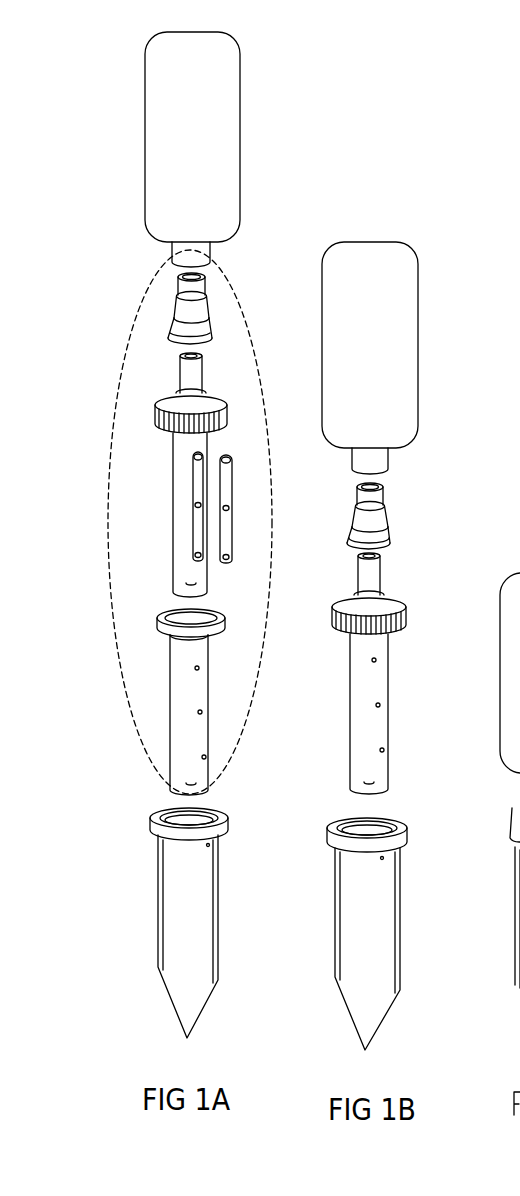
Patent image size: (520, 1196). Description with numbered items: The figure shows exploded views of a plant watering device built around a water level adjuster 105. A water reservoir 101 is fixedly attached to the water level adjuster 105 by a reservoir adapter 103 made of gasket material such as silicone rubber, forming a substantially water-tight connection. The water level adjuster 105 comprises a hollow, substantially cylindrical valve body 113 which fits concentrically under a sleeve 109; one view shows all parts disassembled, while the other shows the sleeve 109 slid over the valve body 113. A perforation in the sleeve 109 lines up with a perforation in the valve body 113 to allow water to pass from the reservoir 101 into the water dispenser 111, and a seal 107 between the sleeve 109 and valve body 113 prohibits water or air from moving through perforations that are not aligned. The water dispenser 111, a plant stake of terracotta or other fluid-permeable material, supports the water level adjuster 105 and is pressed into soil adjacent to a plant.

In FIG. 1A, the water reservoir 101 is at (145, 158).
In FIG. 1B, the water reservoir 101 is at (425, 328).
In FIG. 1A, the reservoir adapter 103 is at (174, 307).
In FIG. 1B, the reservoir adapter 103 is at (388, 497).
In FIG. 1A, the water level adjuster 105 is at (117, 390).
In FIG. 1A, the seal 107 is at (232, 490).
In FIG. 1A, the sleeve 109 is at (168, 707).
In FIG. 1B, the sleeve 109 is at (397, 665).
In FIG. 1A, the water dispenser 111 is at (158, 865).
In FIG. 1B, the water dispenser 111 is at (402, 902).
In FIG. 1A, the valve body 113 is at (172, 493).
In FIG. 1B, the valve body 113 is at (372, 575).